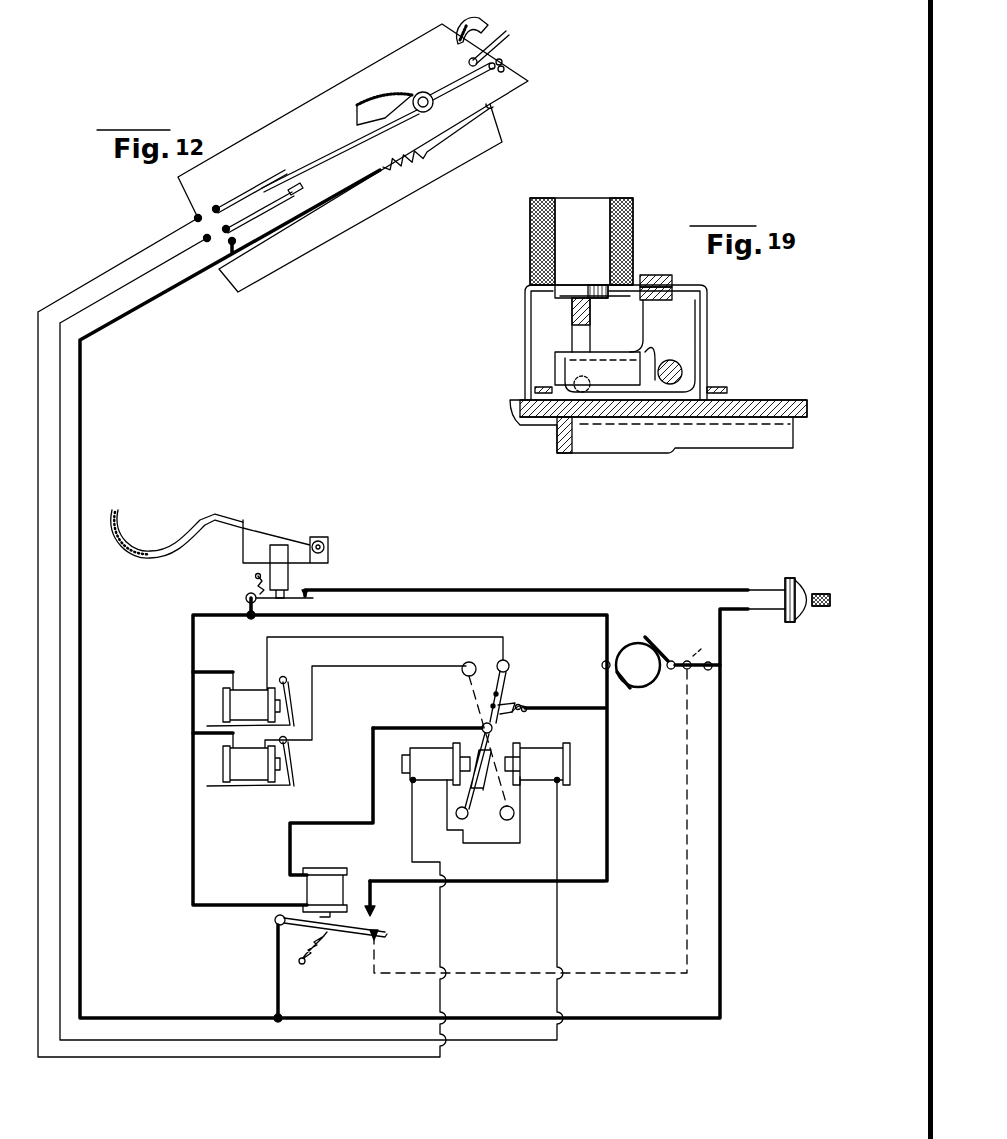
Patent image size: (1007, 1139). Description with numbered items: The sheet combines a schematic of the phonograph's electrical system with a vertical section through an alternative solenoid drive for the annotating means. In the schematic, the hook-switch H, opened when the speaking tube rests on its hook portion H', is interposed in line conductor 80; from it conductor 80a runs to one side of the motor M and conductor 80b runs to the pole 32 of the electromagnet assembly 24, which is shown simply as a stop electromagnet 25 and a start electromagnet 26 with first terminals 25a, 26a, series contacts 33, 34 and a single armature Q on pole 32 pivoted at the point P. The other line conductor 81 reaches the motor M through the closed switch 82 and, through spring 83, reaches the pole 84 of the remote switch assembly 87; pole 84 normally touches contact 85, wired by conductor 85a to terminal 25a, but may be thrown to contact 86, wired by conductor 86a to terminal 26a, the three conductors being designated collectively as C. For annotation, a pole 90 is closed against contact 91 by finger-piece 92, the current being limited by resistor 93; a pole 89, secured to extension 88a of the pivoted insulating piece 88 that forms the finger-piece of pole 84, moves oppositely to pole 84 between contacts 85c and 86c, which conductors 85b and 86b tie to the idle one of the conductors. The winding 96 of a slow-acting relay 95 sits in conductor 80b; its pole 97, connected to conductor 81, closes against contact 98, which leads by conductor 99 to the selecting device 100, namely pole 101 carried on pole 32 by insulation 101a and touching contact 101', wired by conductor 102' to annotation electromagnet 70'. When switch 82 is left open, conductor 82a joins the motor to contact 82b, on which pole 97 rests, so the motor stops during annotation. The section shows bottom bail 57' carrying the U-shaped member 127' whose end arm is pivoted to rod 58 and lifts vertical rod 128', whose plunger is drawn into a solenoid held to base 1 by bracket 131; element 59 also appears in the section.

In FIG. 12, the switch assembly 87 is at (306, 90).
In FIG. 12, the conductor 85b is at (392, 62).
In FIG. 12, the conductor 86b is at (476, 158).
In FIG. 12, the contact 85 is at (283, 172).
In FIG. 12, the contact 86 is at (296, 194).
In FIG. 12, the conductor 85a is at (148, 246).
In FIG. 12, the conductor 86a is at (164, 268).
In FIG. 12, the line conductor 81 is at (200, 280).
In FIG. 12, the spring 83 is at (340, 181).
In FIG. 12, the switch pole 84 is at (322, 152).
In FIG. 12, the pivoted insulating piece 88 is at (384, 99).
In FIG. 12, the extension 88a is at (449, 86).
In FIG. 12, the pole 89 is at (470, 80).
In FIG. 12, the contact 86c is at (478, 83).
In FIG. 12, the contact 85c is at (465, 70).
In FIG. 12, the pole 90 is at (508, 33).
In FIG. 12, the contact 91 is at (508, 45).
In FIG. 12, the finger-piece 92 is at (486, 28).
In FIG. 12, the resistor 93 is at (430, 155).
In FIG. 12, the conductors C is at (86, 434).
In FIG. 12, the hook portion H' is at (219, 549).
In FIG. 12, the hook-switch H is at (301, 591).
In FIG. 12, the line conductor 80 is at (462, 589).
In FIG. 12, the conductor 80a is at (562, 616).
In FIG. 12, the conductor 80b is at (288, 858).
In FIG. 12, the conductor 99 is at (608, 790).
In FIG. 12, the relay contact 98 is at (376, 913).
In FIG. 12, the electromagnet 70' is at (348, 681).
In FIG. 12, the conductor 102' is at (378, 628).
In FIG. 12, the contact 101' is at (525, 649).
In FIG. 12, the selecting device 100 is at (524, 670).
In FIG. 12, the switch pole 101 is at (527, 695).
In FIG. 12, the insulation 101a is at (521, 700).
In FIG. 12, the pivot point P is at (484, 720).
In FIG. 12, the switch pole 32 is at (483, 726).
In FIG. 12, the armature Q is at (492, 760).
In FIG. 12, the series contact 34 is at (469, 812).
In FIG. 12, the series contact 33 is at (500, 818).
In FIG. 12, the electromagnet assembly 24 is at (532, 744).
In FIG. 12, the stop electromagnet 25 is at (406, 761).
In FIG. 12, the first terminal 25a is at (411, 784).
In FIG. 12, the start electromagnet 26 is at (568, 756).
In FIG. 12, the first terminal 26a is at (562, 783).
In FIG. 12, the motor M is at (638, 662).
In FIG. 12, the switch 82 is at (707, 652).
In FIG. 12, the conductor 82a is at (686, 872).
In FIG. 12, the contact 82b is at (378, 945).
In FIG. 12, the low-voltage relay 95 is at (350, 876).
In FIG. 12, the winding 96 is at (325, 892).
In FIG. 12, the armature-pole 97 is at (352, 941).
In FIG. 19, the bracket 131 is at (707, 312).
In FIG. 19, the vertical rod 128' is at (533, 323).
In FIG. 19, the U-shaped member 127' is at (558, 372).
In FIG. 19, the bottom bail 57' is at (680, 282).
In FIG. 19, the rod 58 is at (682, 370).
In FIG. 19, the lever 59 is at (683, 400).
In FIG. 19, the base 1 is at (760, 399).